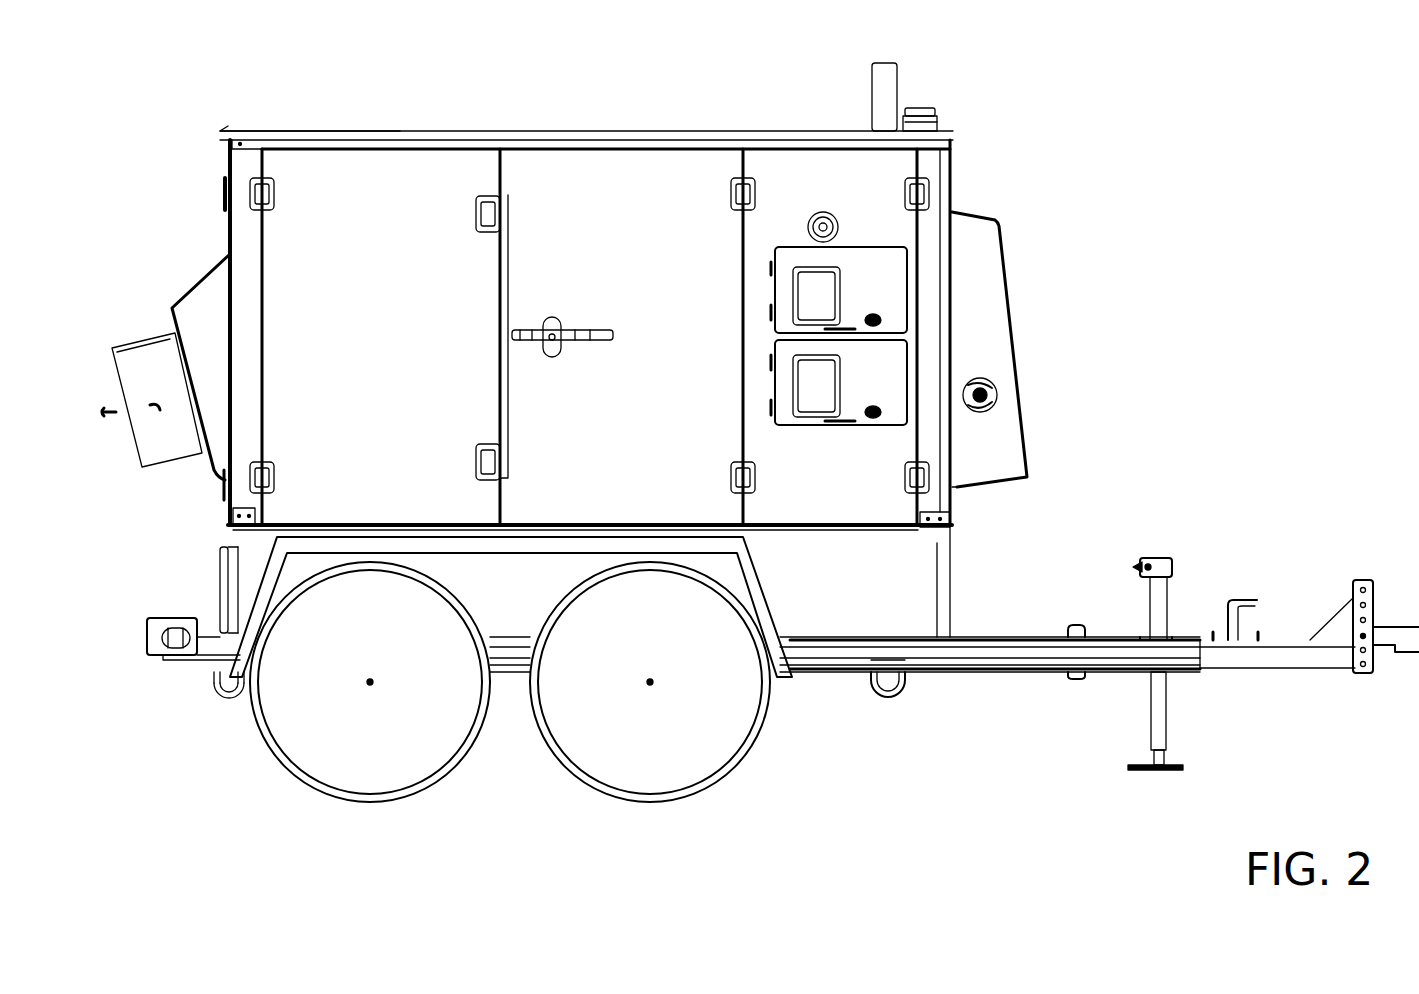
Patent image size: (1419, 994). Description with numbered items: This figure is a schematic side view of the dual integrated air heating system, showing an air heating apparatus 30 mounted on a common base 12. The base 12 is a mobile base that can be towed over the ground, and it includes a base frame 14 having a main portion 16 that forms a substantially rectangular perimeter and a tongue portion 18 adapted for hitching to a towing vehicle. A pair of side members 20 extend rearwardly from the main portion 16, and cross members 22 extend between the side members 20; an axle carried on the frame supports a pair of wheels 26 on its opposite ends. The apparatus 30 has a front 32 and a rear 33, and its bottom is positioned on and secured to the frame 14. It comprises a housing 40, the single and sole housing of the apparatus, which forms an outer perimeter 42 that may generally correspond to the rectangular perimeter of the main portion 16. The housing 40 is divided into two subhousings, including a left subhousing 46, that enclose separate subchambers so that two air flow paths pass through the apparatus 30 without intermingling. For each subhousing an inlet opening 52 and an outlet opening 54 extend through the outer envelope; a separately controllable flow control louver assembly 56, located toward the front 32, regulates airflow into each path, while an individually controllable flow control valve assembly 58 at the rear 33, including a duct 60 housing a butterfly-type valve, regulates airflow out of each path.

The common base 12 is at (1203, 552).
The base frame 14 is at (950, 748).
The main portion 16 is at (968, 566).
The tongue portion 18 is at (1012, 674).
The side members 20 is at (870, 617).
The cross members 22 is at (952, 606).
The wheels 26 is at (720, 777).
The air heating apparatus 30 is at (995, 160).
The front 32 is at (970, 130).
The rear 33 is at (184, 156).
The housing 40 is at (537, 140).
The outer perimeter 42 is at (285, 265).
The left subhousing 46 is at (305, 170).
The inlet opening 52 is at (1048, 430).
The outlet opening 54 is at (108, 462).
The flow control louver assembly 56 is at (184, 485).
The flow control valve assembly 58 is at (1030, 293).
The duct 60 is at (155, 335).